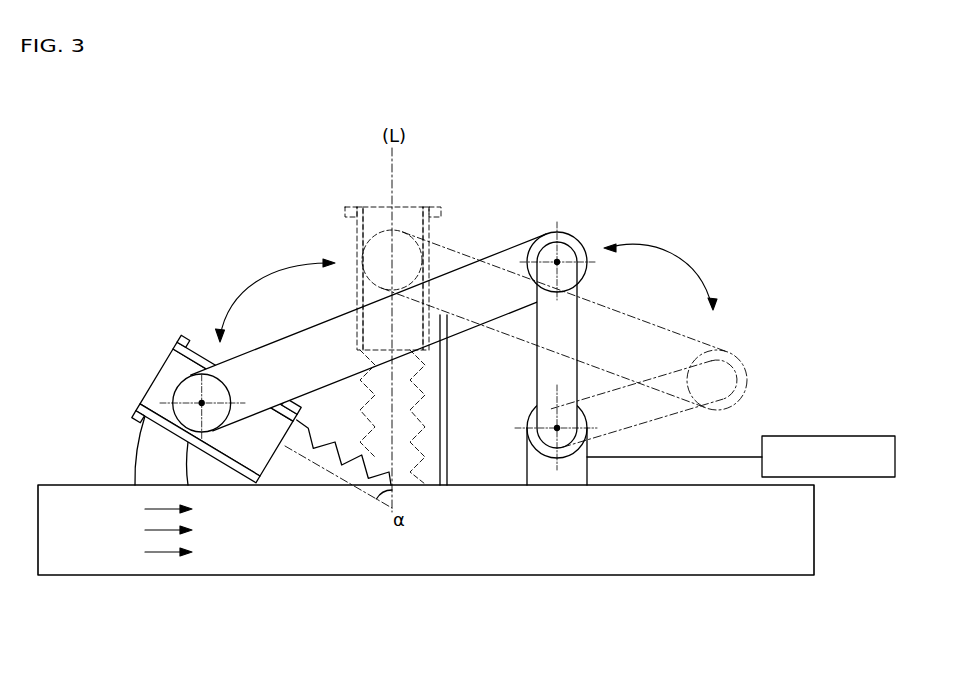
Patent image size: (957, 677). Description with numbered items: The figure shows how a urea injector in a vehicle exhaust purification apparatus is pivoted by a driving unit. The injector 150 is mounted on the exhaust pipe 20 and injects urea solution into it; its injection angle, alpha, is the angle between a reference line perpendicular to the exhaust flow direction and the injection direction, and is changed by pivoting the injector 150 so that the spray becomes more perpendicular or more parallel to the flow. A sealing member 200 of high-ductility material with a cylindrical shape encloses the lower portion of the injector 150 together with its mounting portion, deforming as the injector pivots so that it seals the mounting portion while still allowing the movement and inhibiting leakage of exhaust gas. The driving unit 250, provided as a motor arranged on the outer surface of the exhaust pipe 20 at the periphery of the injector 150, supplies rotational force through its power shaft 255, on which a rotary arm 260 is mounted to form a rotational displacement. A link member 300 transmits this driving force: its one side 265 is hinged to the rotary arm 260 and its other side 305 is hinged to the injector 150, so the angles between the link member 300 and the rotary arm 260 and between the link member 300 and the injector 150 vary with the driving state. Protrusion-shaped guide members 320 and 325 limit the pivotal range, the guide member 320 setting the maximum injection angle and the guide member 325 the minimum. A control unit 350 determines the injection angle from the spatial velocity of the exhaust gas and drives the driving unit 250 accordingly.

The exhaust pipe 20 is at (220, 565).
The injector 150 is at (160, 362).
The sealing member 200 is at (382, 452).
The driving unit 250 is at (545, 470).
The power shaft 255 is at (557, 430).
The rotary arm 260 is at (565, 338).
The one side of the link member 265 is at (557, 261).
The link member 300 is at (508, 255).
The other side of the link member 305 is at (201, 403).
The guide member 320 is at (145, 460).
The guide member 325 is at (442, 467).
The control unit 350 is at (833, 436).